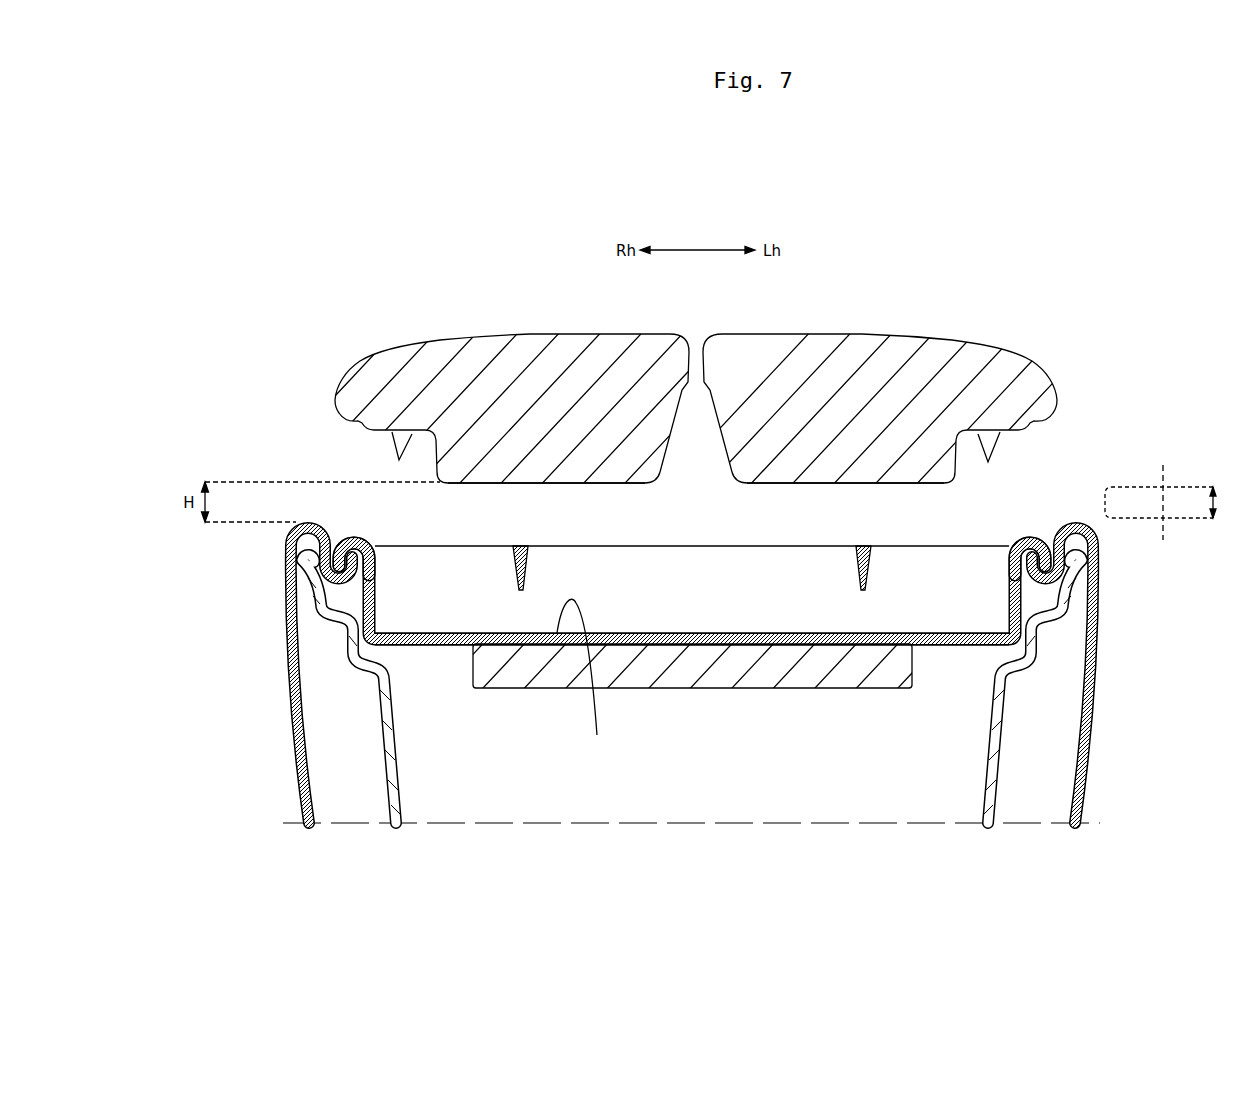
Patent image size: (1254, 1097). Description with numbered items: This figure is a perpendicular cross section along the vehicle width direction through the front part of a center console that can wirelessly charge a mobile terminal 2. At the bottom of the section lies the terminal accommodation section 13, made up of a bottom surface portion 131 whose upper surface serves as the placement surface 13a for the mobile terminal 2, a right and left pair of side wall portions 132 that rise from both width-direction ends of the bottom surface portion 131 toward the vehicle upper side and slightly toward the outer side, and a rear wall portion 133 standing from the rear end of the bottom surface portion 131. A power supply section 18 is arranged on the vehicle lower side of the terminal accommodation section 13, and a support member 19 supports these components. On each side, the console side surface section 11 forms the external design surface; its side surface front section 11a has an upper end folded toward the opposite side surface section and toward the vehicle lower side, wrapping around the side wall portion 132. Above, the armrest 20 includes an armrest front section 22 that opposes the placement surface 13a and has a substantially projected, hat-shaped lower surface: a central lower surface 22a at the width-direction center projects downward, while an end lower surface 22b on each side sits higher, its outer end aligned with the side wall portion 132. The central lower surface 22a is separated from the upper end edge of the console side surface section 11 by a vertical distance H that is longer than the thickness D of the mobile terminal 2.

The mobile terminal 2 is at (1132, 487).
The console side surface section 11 is at (692, 675).
The side surface front section 11a is at (297, 740).
The terminal accommodation section 13 is at (720, 555).
The placement surface 13a is at (584, 677).
The bottom surface portion 131 is at (957, 650).
The side wall portion 132 is at (378, 588).
The rear wall portion 133 is at (670, 560).
The power supply section 18 is at (679, 692).
The support member 19 is at (401, 762).
The armrest 20 is at (675, 382).
The armrest front section 22 is at (602, 355).
The central lower surface 22a is at (522, 485).
The end lower surface 22b is at (398, 458).